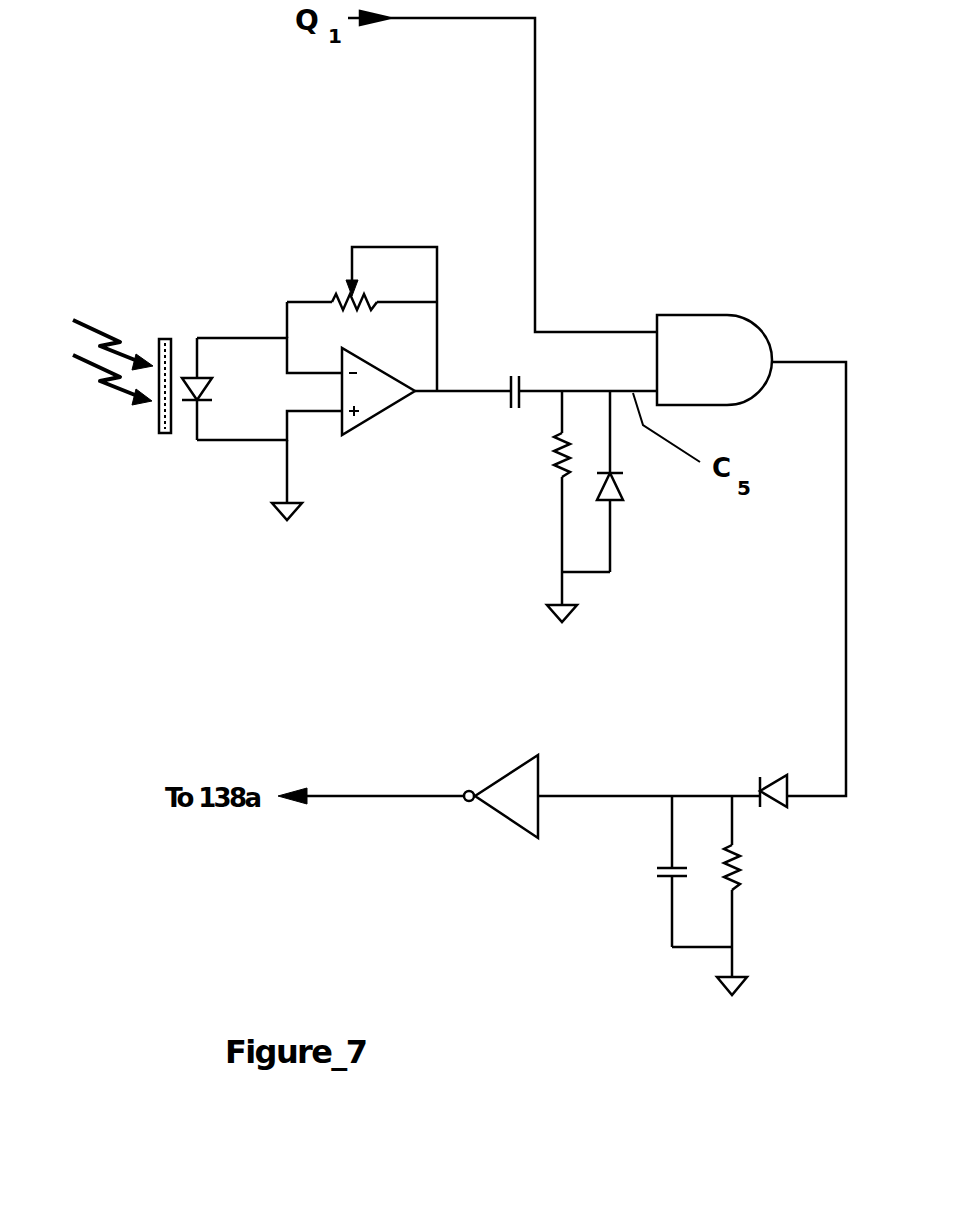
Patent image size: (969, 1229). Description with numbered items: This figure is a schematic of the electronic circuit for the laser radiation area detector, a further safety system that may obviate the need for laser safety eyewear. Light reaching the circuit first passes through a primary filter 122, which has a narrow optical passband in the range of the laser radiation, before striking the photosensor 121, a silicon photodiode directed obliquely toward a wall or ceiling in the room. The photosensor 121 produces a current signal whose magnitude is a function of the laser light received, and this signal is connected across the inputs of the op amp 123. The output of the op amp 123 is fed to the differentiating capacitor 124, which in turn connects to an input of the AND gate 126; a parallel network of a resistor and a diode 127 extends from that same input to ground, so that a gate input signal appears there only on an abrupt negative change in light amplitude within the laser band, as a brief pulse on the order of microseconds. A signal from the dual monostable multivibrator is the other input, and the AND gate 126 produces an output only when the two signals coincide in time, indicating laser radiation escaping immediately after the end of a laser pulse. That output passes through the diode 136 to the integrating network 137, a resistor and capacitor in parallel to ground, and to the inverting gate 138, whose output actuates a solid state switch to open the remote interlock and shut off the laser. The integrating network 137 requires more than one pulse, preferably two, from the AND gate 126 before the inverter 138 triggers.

The photosensor 121 is at (192, 403).
The primary filter 122 is at (157, 335).
The op amp 123 is at (368, 412).
The differentiating capacitor 124 is at (510, 407).
The AND gate 126 is at (729, 374).
The clamping diode 127 is at (582, 505).
The diode 136 is at (768, 780).
The integrating network 137 is at (697, 887).
The inverting gate 138 is at (505, 790).